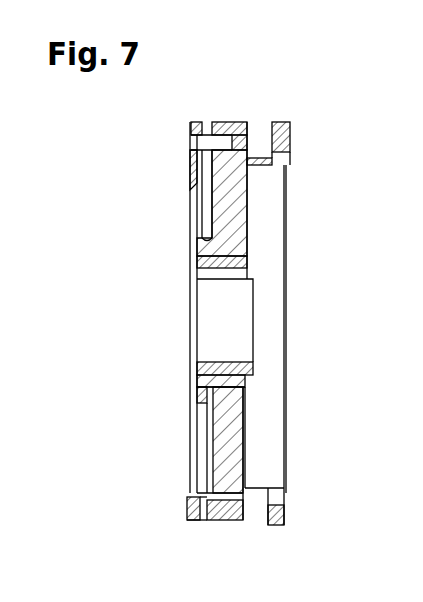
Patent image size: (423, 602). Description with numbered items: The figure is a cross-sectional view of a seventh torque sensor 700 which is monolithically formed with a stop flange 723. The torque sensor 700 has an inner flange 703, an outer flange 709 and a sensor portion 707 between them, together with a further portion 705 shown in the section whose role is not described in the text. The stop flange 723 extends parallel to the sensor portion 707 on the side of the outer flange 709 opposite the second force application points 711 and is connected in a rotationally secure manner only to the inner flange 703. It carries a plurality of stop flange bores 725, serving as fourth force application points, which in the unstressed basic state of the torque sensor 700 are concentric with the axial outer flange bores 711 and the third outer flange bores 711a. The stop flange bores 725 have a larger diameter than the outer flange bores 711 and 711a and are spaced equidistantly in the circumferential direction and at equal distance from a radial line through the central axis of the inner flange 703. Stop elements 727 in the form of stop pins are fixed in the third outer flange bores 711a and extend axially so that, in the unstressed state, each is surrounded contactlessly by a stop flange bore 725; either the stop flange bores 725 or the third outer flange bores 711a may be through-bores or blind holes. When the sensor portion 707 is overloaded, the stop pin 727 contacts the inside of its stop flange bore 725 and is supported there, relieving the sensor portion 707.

The seventh torque sensor 700 is at (298, 112).
The inner flange 703 is at (254, 365).
The outer sleeve 705 is at (190, 378).
The sensor portion 707 is at (247, 415).
The outer flange 709 is at (248, 471).
The axial outer flange bores 711 is at (285, 511).
The third outer flange bores 711a is at (243, 522).
The stop flange 723 is at (190, 428).
The stop flange bores 725 is at (196, 462).
The stop elements 727 is at (197, 522).